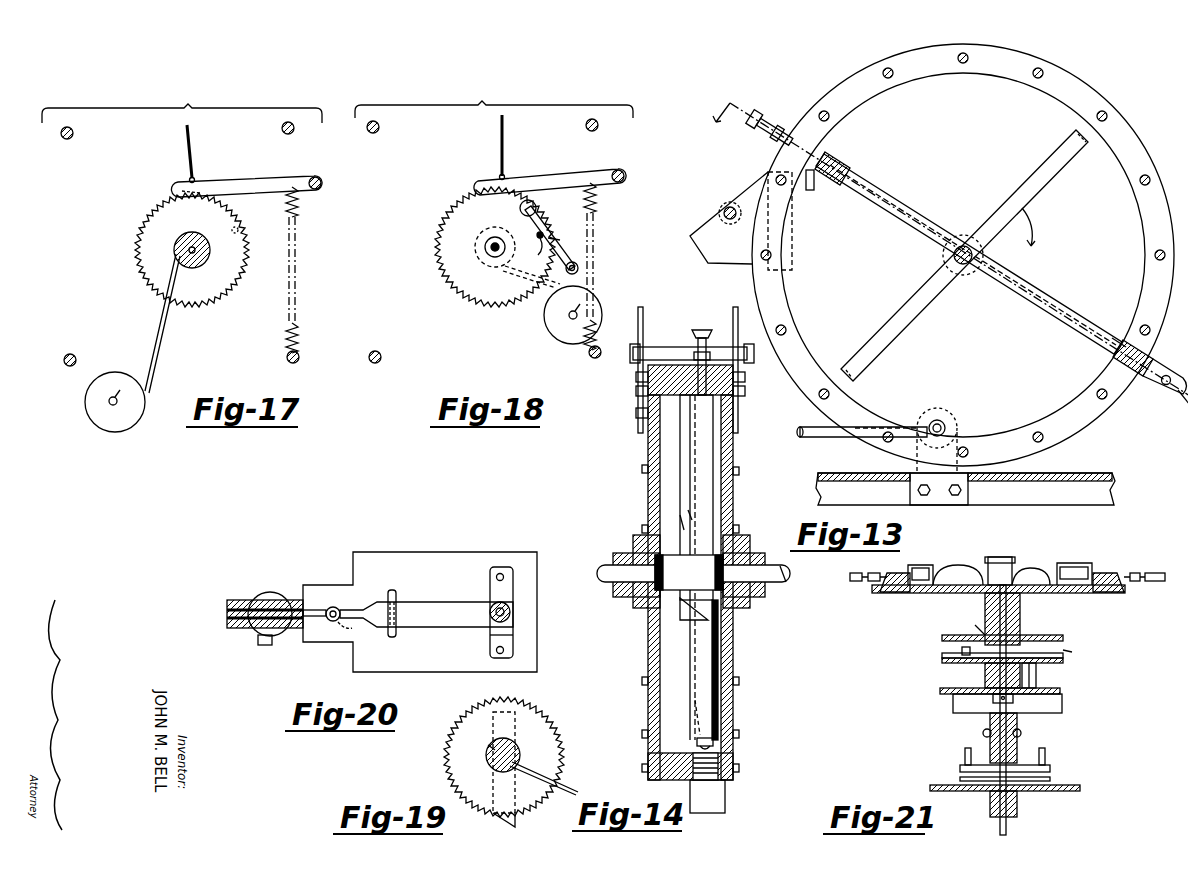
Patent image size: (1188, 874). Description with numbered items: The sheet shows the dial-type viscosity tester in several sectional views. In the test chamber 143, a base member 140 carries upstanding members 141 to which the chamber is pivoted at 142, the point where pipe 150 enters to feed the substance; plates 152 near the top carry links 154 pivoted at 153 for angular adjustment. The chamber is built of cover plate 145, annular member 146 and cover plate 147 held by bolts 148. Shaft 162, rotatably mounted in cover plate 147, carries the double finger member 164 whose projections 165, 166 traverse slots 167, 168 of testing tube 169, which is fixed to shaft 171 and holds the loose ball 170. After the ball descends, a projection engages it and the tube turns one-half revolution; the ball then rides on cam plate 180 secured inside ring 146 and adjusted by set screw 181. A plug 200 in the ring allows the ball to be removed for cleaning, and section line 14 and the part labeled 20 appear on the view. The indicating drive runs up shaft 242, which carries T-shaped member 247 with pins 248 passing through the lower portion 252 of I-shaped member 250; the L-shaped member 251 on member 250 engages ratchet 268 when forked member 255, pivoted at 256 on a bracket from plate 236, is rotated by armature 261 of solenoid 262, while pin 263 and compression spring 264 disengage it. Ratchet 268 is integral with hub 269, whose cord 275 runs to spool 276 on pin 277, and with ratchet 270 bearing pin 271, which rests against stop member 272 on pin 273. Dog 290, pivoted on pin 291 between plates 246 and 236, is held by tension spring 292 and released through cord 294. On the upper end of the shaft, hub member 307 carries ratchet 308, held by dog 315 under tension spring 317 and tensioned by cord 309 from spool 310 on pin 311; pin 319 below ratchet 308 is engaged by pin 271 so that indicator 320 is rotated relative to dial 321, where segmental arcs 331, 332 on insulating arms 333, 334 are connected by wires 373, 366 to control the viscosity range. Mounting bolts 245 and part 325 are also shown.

In FIG. 17, the mounting bolt 245 is at (61, 136).
In FIG. 18, the mounting bolt 245 is at (380, 128).
In FIG. 17, the lever 325 is at (196, 156).
In FIG. 17, the dog 315 is at (272, 178).
In FIG. 17, the pin 291 is at (322, 178).
In FIG. 18, the pin 291 is at (624, 172).
In FIG. 17, the pin 319 is at (243, 214).
In FIG. 18, the pin 319 is at (540, 250).
In FIG. 21, the pin 319 is at (975, 630).
In FIG. 17, the hub member 307 is at (196, 234).
In FIG. 21, the hub member 307 is at (985, 610).
In FIG. 17, the shaft 242 is at (195, 266).
In FIG. 18, the shaft 242 is at (486, 246).
In FIG. 20, the shaft 242 is at (512, 618).
In FIG. 19, the shaft 242 is at (520, 755).
In FIG. 21, the shaft 242 is at (1008, 824).
In FIG. 17, the ratchet member 308 is at (246, 276).
In FIG. 21, the ratchet member 308 is at (1050, 635).
In FIG. 17, the cord 309 is at (166, 332).
In FIG. 17, the tension spring 317 is at (298, 324).
In FIG. 17, the pin 311 is at (123, 388).
In FIG. 17, the spool member 310 is at (86, 405).
In FIG. 18, the link or cord 294 is at (506, 140).
In FIG. 18, the dog 290 is at (560, 174).
In FIG. 18, the pin 271 is at (540, 210).
In FIG. 21, the pin 271 is at (960, 652).
In FIG. 18, the tension spring 292 is at (600, 203).
In FIG. 18, the hooked stop member 272 is at (562, 238).
In FIG. 21, the hooked stop member 272 is at (942, 660).
In FIG. 18, the ratchet 270 is at (440, 266).
In FIG. 21, the ratchet 270 is at (1065, 656).
In FIG. 18, the pin 273 is at (580, 267).
In FIG. 21, the pin 273 is at (1036, 676).
In FIG. 18, the cord 275 is at (520, 280).
In FIG. 19, the cord 275 is at (570, 787).
In FIG. 18, the pin 277 is at (583, 302).
In FIG. 18, the spool 276 is at (546, 318).
In FIG. 13, the test chamber 143 is at (1083, 80).
In FIG. 14, the test chamber 143 is at (735, 449).
In FIG. 13, the bolts 148 is at (1110, 118).
In FIG. 14, the bolts 148 is at (636, 414).
In FIG. 13, the annular member 146 is at (1149, 148).
In FIG. 14, the annular member 146 is at (665, 347).
In FIG. 13, the set screw 181 is at (768, 120).
In FIG. 14, the set screw 181 is at (700, 330).
In FIG. 13, the projection 166 is at (1072, 138).
In FIG. 14, the projection 166 is at (688, 622).
In FIG. 13, the slot 167 is at (833, 158).
In FIG. 14, the slot 167 is at (684, 412).
In FIG. 13, the double finger member 164 is at (1023, 186).
In FIG. 14, the double finger member 164 is at (678, 545).
In FIG. 13, the plates 152 is at (745, 198).
In FIG. 14, the plates 152 is at (636, 392).
In FIG. 13, the pivot 153 is at (723, 213).
In FIG. 14, the pivot 153 is at (636, 377).
In FIG. 13, the cam plate 180 is at (802, 190).
In FIG. 14, the cam plate 180 is at (745, 392).
In FIG. 13, the shaft 162 is at (953, 258).
In FIG. 14, the shaft 162 is at (600, 565).
In FIG. 13, the testing tube 169 is at (1050, 292).
In FIG. 14, the testing tube 169 is at (692, 474).
In FIG. 13, the projection 165 is at (852, 362).
In FIG. 14, the projection 165 is at (692, 518).
In FIG. 13, the slot 168 is at (1117, 334).
In FIG. 14, the slot 168 is at (697, 742).
In FIG. 13, the tab 20 is at (1160, 366).
In FIG. 13, the ball 170 is at (1112, 362).
In FIG. 14, the ball 170 is at (696, 720).
In FIG. 13, the pivot 142 is at (937, 418).
In FIG. 13, the members 141 is at (960, 430).
In FIG. 13, the pipe 150 is at (812, 427).
In FIG. 13, the base member 140 is at (1088, 473).
In FIG. 13, the section line 14 is at (947, 273).
In FIG. 14, the links 154 is at (640, 307).
In FIG. 14, the cover plate 147 is at (648, 498).
In FIG. 14, the cover plate 145 is at (738, 495).
In FIG. 14, the plug 200 is at (726, 802).
In FIG. 14, the shaft 171 is at (780, 584).
In FIG. 20, the plate 236 is at (478, 552).
In FIG. 20, the armature 261 is at (268, 598).
In FIG. 20, the solenoid 262 is at (282, 594).
In FIG. 20, the pivot 256 is at (394, 590).
In FIG. 20, the pins 248 is at (496, 577).
In FIG. 21, the pins 248 is at (968, 760).
In FIG. 20, the compression spring 264 is at (342, 610).
In FIG. 20, the member 255 is at (413, 606).
In FIG. 21, the member 255 is at (983, 732).
In FIG. 20, the I-shaped member 250 is at (512, 610).
In FIG. 21, the I-shaped member 250 is at (1022, 732).
In FIG. 20, the pin 263 is at (352, 630).
In FIG. 20, the lower horizontally disposed portion 252 is at (490, 636).
In FIG. 21, the lower horizontally disposed portion 252 is at (1052, 778).
In FIG. 19, the ratchet member 268 is at (530, 707).
In FIG. 21, the ratchet member 268 is at (940, 692).
In FIG. 19, the hub member 269 is at (492, 746).
In FIG. 21, the hub member 269 is at (985, 675).
In FIG. 19, the L-shaped member 251 is at (505, 826).
In FIG. 21, the L-shaped member 251 is at (1062, 700).
In FIG. 21, the segmental arc 332 is at (925, 565).
In FIG. 21, the arm 334 is at (955, 565).
In FIG. 21, the indicator 320 is at (1008, 557).
In FIG. 21, the arm 333 is at (1035, 568).
In FIG. 21, the segmental arc 331 is at (1078, 563).
In FIG. 21, the wire 373 is at (1155, 573).
In FIG. 21, the wire 366 is at (850, 580).
In FIG. 21, the dial 321 is at (872, 592).
In FIG. 21, the plate 246 is at (1128, 592).
In FIG. 21, the T-shaped member 247 is at (1018, 805).